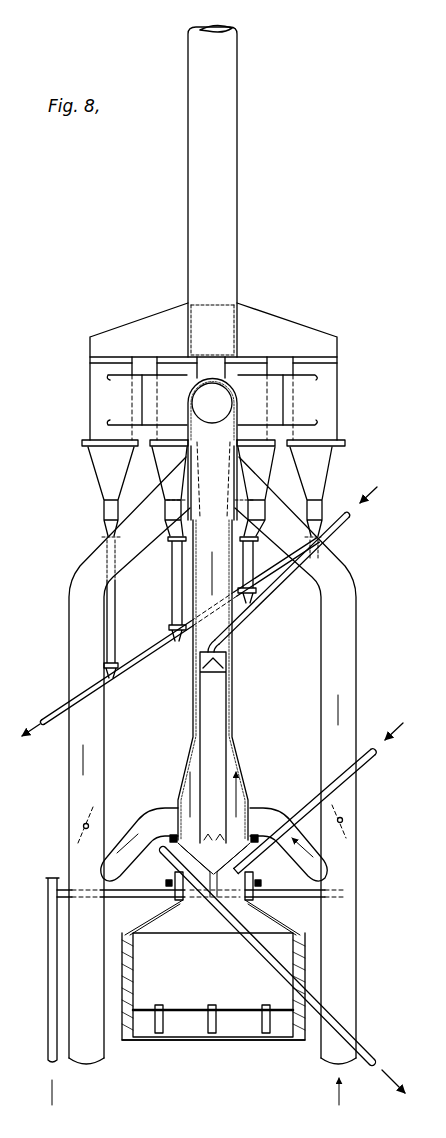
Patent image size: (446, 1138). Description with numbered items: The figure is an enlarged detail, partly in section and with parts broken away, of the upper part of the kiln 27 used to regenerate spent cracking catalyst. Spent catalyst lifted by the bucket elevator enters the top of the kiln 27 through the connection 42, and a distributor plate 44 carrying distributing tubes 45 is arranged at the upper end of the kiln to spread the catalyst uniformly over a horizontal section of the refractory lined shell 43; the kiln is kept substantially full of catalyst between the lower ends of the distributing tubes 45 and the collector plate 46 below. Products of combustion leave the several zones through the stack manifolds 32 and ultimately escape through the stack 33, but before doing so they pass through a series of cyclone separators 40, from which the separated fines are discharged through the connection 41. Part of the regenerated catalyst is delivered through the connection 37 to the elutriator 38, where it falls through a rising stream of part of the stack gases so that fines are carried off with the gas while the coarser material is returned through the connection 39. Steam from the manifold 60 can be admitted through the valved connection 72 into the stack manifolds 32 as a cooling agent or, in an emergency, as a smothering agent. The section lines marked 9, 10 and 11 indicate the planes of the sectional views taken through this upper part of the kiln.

The section line IX-IX 9 is at (212, 238).
The section line X-X 10 is at (63, 290).
The section line XI-XI 11 is at (63, 366).
The stack 33 is at (237, 125).
The cyclone separators 40 is at (103, 477).
The collector plate 46 is at (403, 487).
The stack manifolds 32 is at (72, 857).
The connection 37 is at (330, 540).
The elutriator 38 is at (233, 708).
The connection 41 is at (56, 712).
The connection 42 is at (313, 802).
The valved connection 72 is at (307, 897).
The connection 39 is at (370, 1047).
The shell 43 is at (127, 1040).
The distributor plate 44 is at (202, 1008).
The distributing tubes 45 is at (207, 1020).
The kiln 27 is at (282, 1042).
The manifold 60 is at (48, 967).